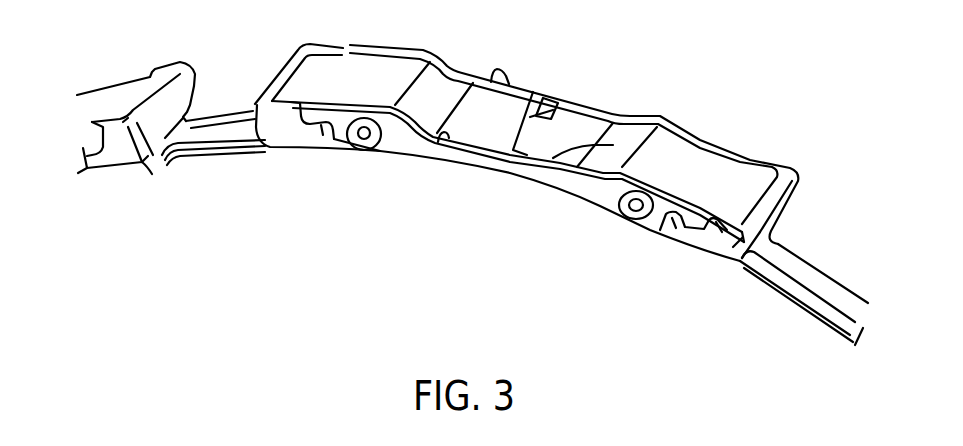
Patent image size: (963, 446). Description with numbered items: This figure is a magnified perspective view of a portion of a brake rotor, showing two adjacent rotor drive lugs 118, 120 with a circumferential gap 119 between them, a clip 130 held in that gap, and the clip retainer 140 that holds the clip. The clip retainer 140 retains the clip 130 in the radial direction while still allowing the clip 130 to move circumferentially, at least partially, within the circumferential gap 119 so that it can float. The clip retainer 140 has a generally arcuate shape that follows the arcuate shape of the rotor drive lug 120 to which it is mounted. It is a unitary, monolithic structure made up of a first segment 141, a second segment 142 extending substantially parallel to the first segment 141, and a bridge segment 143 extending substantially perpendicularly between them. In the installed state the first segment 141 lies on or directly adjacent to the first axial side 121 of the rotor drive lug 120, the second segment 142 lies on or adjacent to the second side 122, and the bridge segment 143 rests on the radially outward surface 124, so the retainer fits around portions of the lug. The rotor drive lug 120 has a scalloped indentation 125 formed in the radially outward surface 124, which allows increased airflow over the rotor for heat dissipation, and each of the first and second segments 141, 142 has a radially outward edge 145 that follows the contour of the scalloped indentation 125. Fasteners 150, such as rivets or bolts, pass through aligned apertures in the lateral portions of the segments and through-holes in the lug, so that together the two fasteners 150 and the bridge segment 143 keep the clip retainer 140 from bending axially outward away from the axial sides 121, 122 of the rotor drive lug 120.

The rotor drive lug 118 is at (114, 94).
The circumferential gap 119 is at (249, 87).
The rotor drive lug 120 is at (697, 146).
The first axial side 121 is at (660, 232).
The second side 122 is at (752, 160).
The radially outward surface 124 is at (717, 195).
The scalloped indentation 125 is at (558, 103).
The clip 130 is at (226, 163).
The clip retainer 140 is at (392, 168).
The first segment 141 is at (458, 160).
The second segment 142 is at (448, 70).
The bridge segment 143 is at (550, 103).
The radially outward edge 145 is at (509, 72).
The fasteners 150 is at (360, 152).